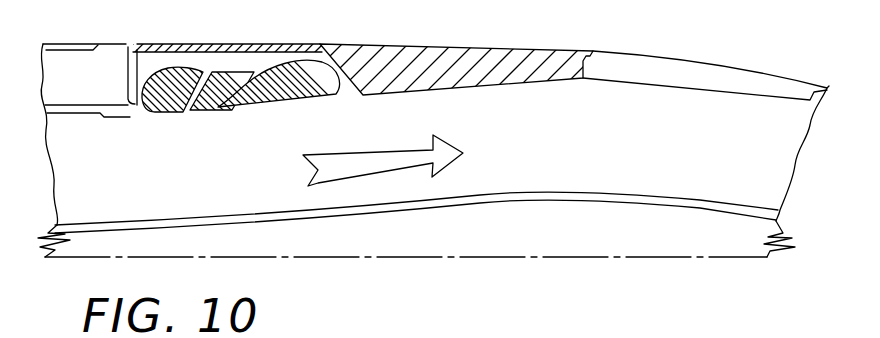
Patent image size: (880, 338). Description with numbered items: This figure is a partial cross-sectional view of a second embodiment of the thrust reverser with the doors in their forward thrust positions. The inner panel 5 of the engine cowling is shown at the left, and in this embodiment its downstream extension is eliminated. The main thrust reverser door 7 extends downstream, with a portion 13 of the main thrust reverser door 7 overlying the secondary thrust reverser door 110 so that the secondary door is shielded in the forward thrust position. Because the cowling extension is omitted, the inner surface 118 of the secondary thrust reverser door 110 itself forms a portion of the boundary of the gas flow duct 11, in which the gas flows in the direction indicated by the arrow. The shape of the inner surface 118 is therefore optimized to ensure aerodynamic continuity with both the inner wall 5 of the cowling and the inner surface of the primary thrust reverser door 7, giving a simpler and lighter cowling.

The inner panel 5 is at (101, 116).
The main thrust reverser door 7 is at (440, 63).
The portion of the main thrust reverser door 13 is at (263, 45).
The secondary thrust reverser door 110 is at (208, 106).
The inner surface 118 is at (283, 107).
The gas flow duct 11 is at (326, 176).